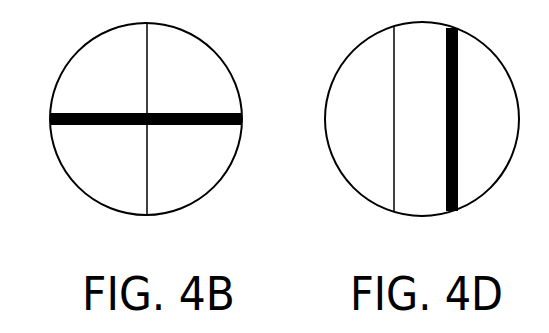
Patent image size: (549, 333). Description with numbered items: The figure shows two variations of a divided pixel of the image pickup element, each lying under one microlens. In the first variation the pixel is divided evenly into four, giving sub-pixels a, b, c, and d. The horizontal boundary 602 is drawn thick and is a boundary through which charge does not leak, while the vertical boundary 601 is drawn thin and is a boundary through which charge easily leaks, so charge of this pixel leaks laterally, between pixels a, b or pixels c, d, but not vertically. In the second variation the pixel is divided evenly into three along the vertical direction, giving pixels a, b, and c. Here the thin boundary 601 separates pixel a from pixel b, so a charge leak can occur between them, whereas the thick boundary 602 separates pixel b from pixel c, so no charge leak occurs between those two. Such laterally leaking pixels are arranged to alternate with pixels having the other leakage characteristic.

In FIG. 4B, the boundary 601 is at (147, 203).
In FIG. 4D, the boundary 601 is at (394, 168).
In FIG. 4B, the boundary 602 is at (233, 115).
In FIG. 4D, the boundary 602 is at (446, 195).
In FIG. 4B, the pixel a is at (104, 82).
In FIG. 4D, the pixel a is at (359, 120).
In FIG. 4B, the pixel b is at (187, 82).
In FIG. 4D, the pixel b is at (414, 120).
In FIG. 4B, the pixel c is at (108, 162).
In FIG. 4D, the pixel c is at (474, 120).
In FIG. 4B, the pixel d is at (190, 162).